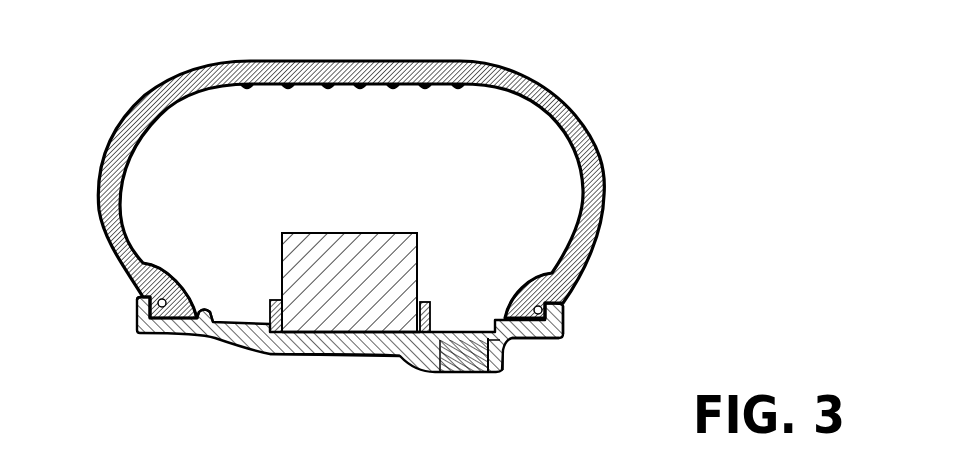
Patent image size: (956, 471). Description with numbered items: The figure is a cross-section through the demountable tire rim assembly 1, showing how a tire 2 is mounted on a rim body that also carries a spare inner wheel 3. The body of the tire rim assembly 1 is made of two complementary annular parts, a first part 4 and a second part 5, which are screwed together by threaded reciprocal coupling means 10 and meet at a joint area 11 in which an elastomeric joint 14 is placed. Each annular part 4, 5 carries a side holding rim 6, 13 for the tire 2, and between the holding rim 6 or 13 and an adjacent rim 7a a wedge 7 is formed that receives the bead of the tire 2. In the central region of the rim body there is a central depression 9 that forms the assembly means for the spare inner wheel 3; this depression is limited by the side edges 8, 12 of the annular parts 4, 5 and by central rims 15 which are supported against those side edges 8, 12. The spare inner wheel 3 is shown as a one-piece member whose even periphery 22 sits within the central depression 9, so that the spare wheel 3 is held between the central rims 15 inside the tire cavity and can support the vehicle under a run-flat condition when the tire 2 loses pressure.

The demountable tire rim assembly 1 is at (358, 368).
The tire 2 is at (622, 168).
The spare inner wheel 3 is at (270, 213).
The first annular part 4 is at (376, 355).
The second annular part 5 is at (562, 350).
The side holding rim 6 is at (138, 308).
The wedge 7 is at (112, 253).
The adjacent rim 7a is at (207, 323).
The side edge 8 is at (264, 322).
The central depression 9 is at (330, 347).
The threaded reciprocal coupling means 10 is at (437, 373).
The joint area 11 is at (470, 377).
The side edge 12 is at (432, 323).
The side holding rim 13 is at (565, 313).
The elastomeric joint 14 is at (488, 375).
The central rim 15 is at (262, 347).
The even periphery 22 is at (380, 233).